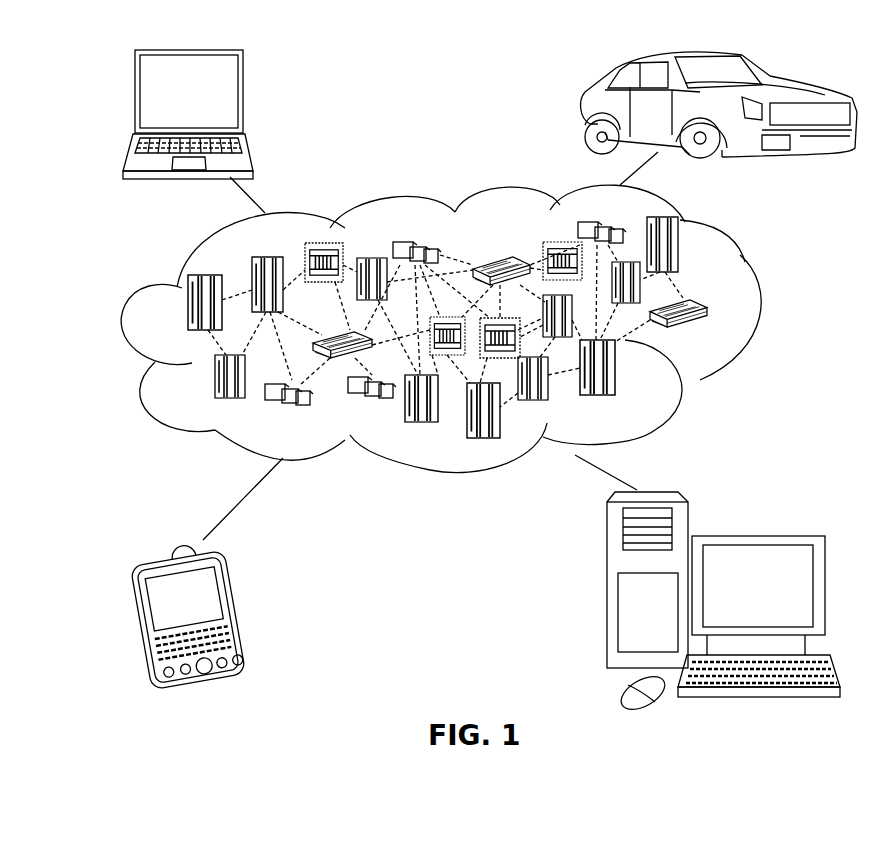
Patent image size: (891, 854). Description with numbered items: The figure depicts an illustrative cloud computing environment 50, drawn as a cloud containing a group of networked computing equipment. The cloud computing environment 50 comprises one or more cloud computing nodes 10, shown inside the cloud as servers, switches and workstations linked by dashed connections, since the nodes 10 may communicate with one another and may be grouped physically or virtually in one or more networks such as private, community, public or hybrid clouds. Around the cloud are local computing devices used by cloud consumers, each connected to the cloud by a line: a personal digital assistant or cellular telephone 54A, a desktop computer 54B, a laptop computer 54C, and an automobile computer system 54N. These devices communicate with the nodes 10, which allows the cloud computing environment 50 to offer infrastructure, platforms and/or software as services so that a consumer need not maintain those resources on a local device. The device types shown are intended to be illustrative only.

The cloud computing node 10 is at (460, 328).
The cloud computing environment 50 is at (757, 312).
The personal digital assistant or cellular telephone 54A is at (235, 610).
The desktop computer 54B is at (755, 535).
The laptop computer 54C is at (246, 97).
The automobile computer system 54N is at (585, 110).